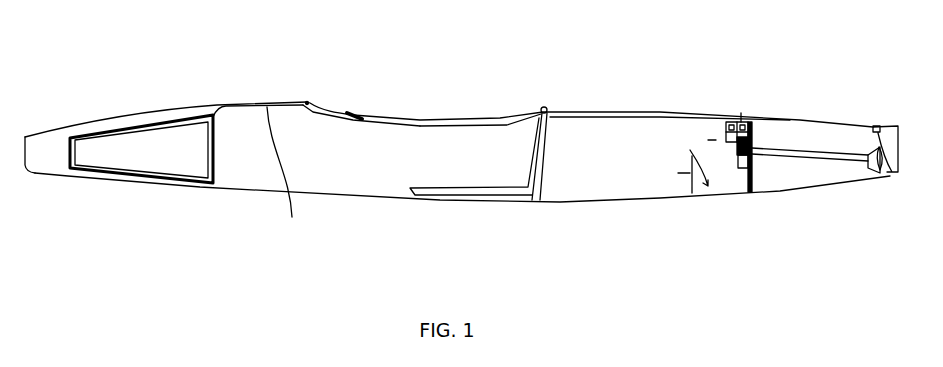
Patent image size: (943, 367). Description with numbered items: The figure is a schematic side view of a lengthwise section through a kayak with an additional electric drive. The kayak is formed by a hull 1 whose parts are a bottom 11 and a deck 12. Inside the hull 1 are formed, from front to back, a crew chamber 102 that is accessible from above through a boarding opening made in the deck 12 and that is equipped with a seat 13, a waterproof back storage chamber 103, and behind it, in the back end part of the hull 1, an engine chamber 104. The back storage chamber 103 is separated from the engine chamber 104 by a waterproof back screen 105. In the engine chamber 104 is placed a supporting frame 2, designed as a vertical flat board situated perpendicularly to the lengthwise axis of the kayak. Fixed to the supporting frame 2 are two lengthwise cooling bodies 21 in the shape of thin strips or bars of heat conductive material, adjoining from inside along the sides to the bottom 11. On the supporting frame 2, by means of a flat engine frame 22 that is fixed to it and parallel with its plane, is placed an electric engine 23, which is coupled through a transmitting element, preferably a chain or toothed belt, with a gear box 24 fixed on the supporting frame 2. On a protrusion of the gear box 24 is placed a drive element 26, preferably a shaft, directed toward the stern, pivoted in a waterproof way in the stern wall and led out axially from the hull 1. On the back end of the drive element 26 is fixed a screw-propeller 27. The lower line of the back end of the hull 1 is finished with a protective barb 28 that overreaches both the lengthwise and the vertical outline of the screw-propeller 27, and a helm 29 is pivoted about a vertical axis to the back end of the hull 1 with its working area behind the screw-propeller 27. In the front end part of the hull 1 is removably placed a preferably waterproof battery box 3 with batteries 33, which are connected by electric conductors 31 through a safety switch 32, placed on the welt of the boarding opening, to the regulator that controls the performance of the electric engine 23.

The hull 1 is at (469, 141).
The bottom 11 is at (331, 208).
The deck 12 is at (172, 103).
The battery box 3 is at (135, 178).
The batteries 33 is at (125, 147).
The electric conductors 31 is at (258, 169).
The safety switch 32 is at (314, 94).
The crew chamber 102 is at (440, 153).
The back storage chamber 103 is at (585, 150).
The seat 13 is at (470, 193).
The cooling bodies 21 is at (692, 156).
The engine chamber 104 is at (712, 145).
The back screen 105 is at (682, 177).
The supporting frame 2 is at (804, 145).
The engine frame 22 is at (736, 163).
The electric engine 23 is at (740, 113).
The gear box 24 is at (755, 137).
The drive element 26 is at (815, 150).
The screw-propeller 27 is at (887, 173).
The protective barb 28 is at (873, 177).
The helm 29 is at (893, 133).